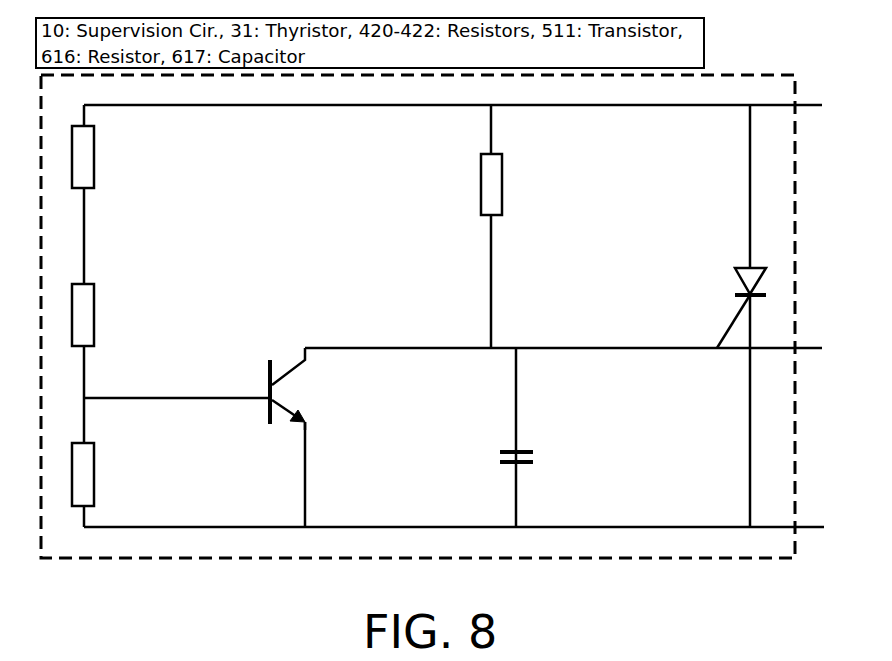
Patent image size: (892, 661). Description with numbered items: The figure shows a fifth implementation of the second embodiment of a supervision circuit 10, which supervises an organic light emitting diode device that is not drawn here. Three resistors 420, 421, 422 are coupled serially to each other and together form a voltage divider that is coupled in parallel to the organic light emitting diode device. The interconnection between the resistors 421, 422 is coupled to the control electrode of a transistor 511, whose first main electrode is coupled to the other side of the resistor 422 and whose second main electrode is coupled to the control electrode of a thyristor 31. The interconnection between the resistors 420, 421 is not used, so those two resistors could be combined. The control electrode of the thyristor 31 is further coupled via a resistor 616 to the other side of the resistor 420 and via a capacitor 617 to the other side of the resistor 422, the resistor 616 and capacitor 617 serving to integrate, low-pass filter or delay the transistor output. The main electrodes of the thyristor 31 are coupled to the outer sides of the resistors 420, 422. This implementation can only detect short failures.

The supervision circuit 10 is at (720, 558).
The thyristor 31 is at (745, 285).
The resistor 420 is at (94, 158).
The resistor 421 is at (94, 310).
The resistor 422 is at (94, 471).
The transistor 511 is at (290, 390).
The resistor 616 is at (502, 184).
The capacitor 617 is at (533, 457).